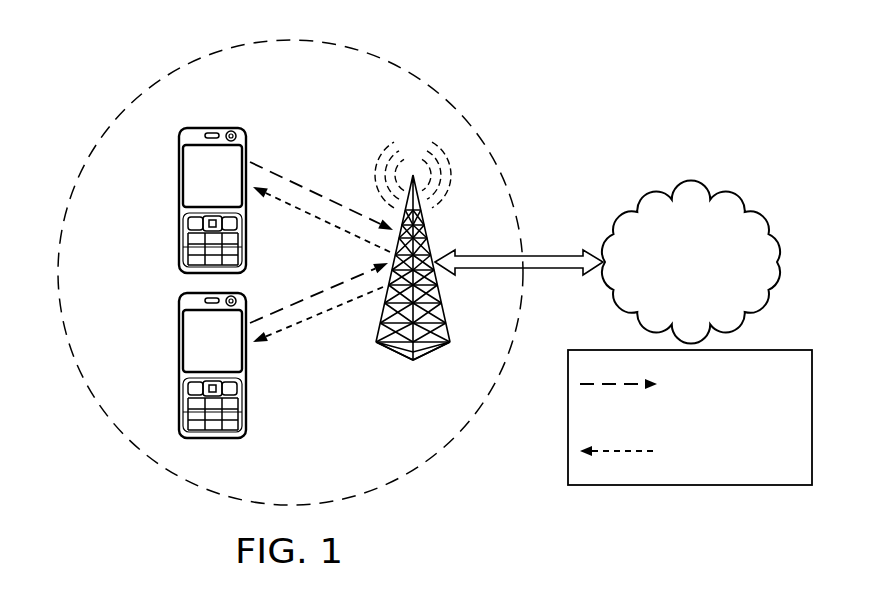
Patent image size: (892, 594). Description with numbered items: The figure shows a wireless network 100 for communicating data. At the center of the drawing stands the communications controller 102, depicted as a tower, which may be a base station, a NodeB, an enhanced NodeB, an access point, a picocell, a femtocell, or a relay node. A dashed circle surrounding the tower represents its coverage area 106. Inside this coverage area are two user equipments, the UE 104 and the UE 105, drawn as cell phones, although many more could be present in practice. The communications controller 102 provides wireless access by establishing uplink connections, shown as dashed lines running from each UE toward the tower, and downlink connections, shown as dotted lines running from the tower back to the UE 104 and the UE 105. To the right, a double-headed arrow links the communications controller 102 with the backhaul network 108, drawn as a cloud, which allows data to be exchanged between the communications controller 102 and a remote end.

The network 100 is at (616, 80).
The communications controller 102 is at (432, 351).
The UE 104 is at (179, 206).
The UE 105 is at (179, 393).
The coverage area 106 is at (178, 60).
The backhaul network 108 is at (693, 197).